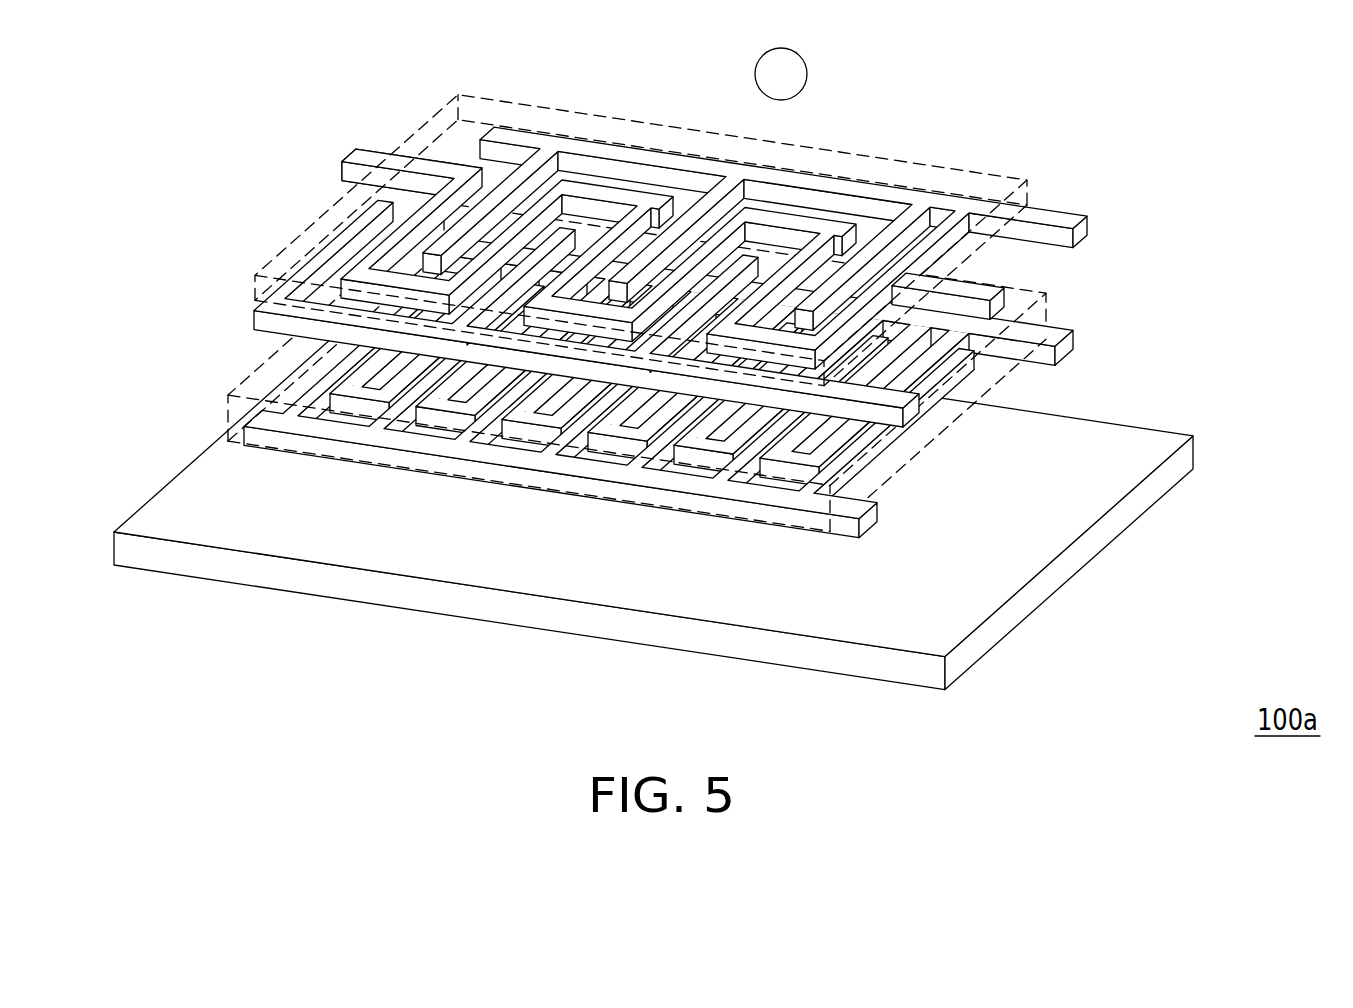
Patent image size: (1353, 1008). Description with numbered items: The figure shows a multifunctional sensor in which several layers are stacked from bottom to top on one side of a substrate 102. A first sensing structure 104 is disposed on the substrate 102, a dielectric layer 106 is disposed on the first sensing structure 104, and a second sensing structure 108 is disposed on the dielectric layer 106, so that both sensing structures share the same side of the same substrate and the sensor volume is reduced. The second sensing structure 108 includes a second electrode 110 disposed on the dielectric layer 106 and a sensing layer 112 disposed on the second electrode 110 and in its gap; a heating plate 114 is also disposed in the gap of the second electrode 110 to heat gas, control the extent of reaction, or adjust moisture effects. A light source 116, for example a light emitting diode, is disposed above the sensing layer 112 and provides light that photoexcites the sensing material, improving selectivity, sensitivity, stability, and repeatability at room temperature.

The substrate 102 is at (1140, 438).
The first sensing structure 104 is at (1065, 345).
The dielectric layer 106 is at (1042, 300).
The second sensing structure 108 is at (753, 261).
The second electrode 110 is at (1088, 230).
The sensing layer 112 is at (1035, 193).
The heating plate 114 is at (340, 162).
The light source 116 is at (806, 68).